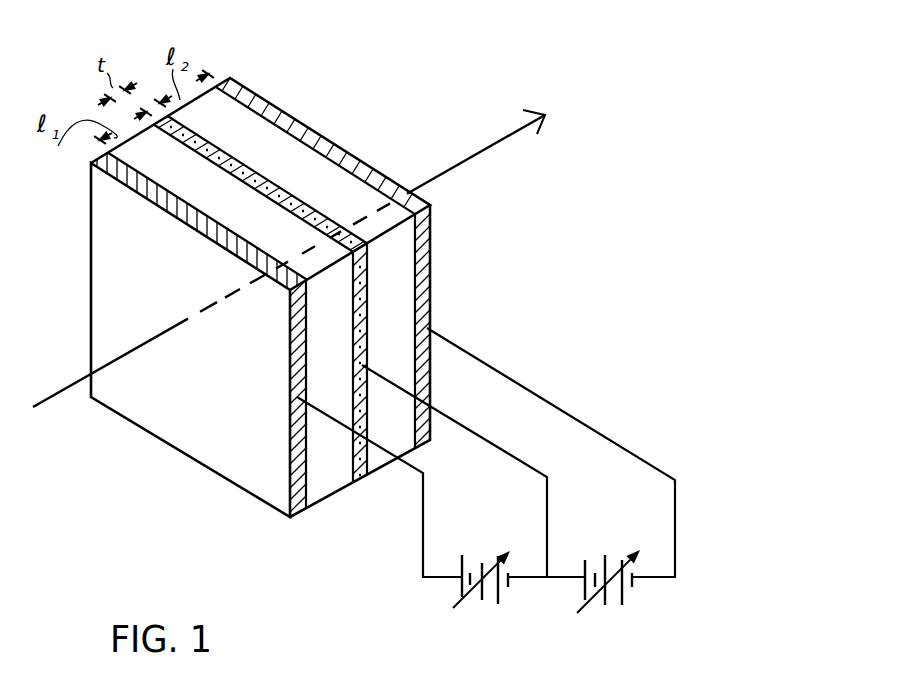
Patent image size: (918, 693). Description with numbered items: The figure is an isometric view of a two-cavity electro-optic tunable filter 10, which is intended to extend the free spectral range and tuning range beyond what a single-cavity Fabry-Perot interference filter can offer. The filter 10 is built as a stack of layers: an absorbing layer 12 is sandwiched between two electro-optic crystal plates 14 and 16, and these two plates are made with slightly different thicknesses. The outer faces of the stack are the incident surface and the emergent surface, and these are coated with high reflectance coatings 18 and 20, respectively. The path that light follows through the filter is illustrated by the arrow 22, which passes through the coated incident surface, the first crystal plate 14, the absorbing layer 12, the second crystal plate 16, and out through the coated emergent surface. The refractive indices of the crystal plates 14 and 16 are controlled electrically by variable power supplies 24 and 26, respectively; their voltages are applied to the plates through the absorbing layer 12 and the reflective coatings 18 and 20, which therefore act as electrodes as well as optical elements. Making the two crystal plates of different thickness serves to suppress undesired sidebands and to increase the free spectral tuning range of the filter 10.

The two-cavity electro-optic tunable filter 10 is at (410, 68).
The absorbing layer 12 is at (288, 192).
The electro-optic crystal plate 14 is at (157, 165).
The electro-optic crystal plate 16 is at (242, 118).
The high reflectance coating 18 is at (173, 204).
The high reflectance coating 20 is at (307, 132).
The arrow 22 is at (465, 155).
The variable power supply 24 is at (478, 557).
The variable power supply 26 is at (603, 557).